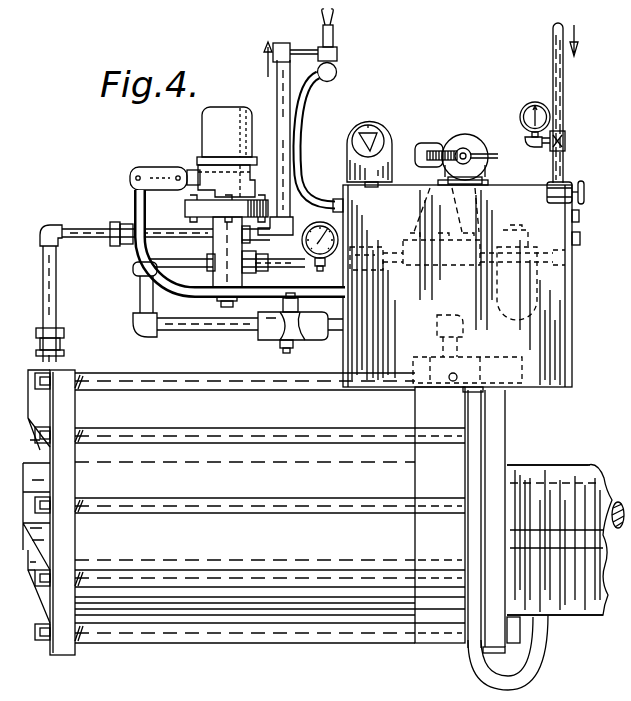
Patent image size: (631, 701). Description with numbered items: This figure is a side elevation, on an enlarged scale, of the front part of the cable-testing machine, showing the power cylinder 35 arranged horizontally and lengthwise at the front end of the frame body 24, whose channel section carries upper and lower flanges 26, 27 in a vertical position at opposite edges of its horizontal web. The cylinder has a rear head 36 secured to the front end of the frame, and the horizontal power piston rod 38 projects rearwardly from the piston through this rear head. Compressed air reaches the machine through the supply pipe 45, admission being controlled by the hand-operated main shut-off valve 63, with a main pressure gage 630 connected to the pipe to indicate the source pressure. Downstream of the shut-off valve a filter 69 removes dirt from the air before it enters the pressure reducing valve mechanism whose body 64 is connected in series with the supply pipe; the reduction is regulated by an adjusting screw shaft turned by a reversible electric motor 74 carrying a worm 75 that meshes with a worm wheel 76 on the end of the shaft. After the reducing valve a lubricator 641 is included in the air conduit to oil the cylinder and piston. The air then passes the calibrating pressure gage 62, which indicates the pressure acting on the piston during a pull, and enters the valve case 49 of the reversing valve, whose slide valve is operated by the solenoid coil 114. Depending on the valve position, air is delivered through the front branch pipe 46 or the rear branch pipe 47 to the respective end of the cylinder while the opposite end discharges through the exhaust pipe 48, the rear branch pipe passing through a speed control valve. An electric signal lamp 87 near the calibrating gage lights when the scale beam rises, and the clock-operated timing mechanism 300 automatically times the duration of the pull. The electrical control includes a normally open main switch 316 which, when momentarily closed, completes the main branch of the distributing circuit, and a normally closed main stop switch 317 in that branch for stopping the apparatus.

The wall plate 24 is at (565, 548).
The upper flange 26 is at (560, 462).
The lower flange 27 is at (577, 612).
The power cylinder 35 is at (244, 512).
The rear head 36 is at (503, 427).
The power piston rod 38 is at (609, 528).
The supply pipe 45 is at (557, 23).
The front branch pipe 46 is at (43, 299).
The rear branch pipe 47 is at (172, 333).
The exhaust pipe 48 is at (281, 42).
The valve case 49 is at (241, 262).
The calibrating pressure gage 62 is at (314, 254).
The main shut-off valve 63 is at (570, 184).
The pressure reducing valve body 64 is at (437, 183).
The filter 69 is at (568, 294).
The reversible electric motor 74 is at (469, 140).
The worm 75 is at (474, 158).
The worm wheel 76 is at (432, 145).
The electric signal lamp 87 is at (336, 71).
The solenoid coil 114 is at (213, 125).
The timing mechanism 300 is at (369, 146).
The main switch 316 is at (579, 217).
The main stop switch 317 is at (580, 240).
The main pressure gage 630 is at (535, 119).
The lubricator 641 is at (457, 301).